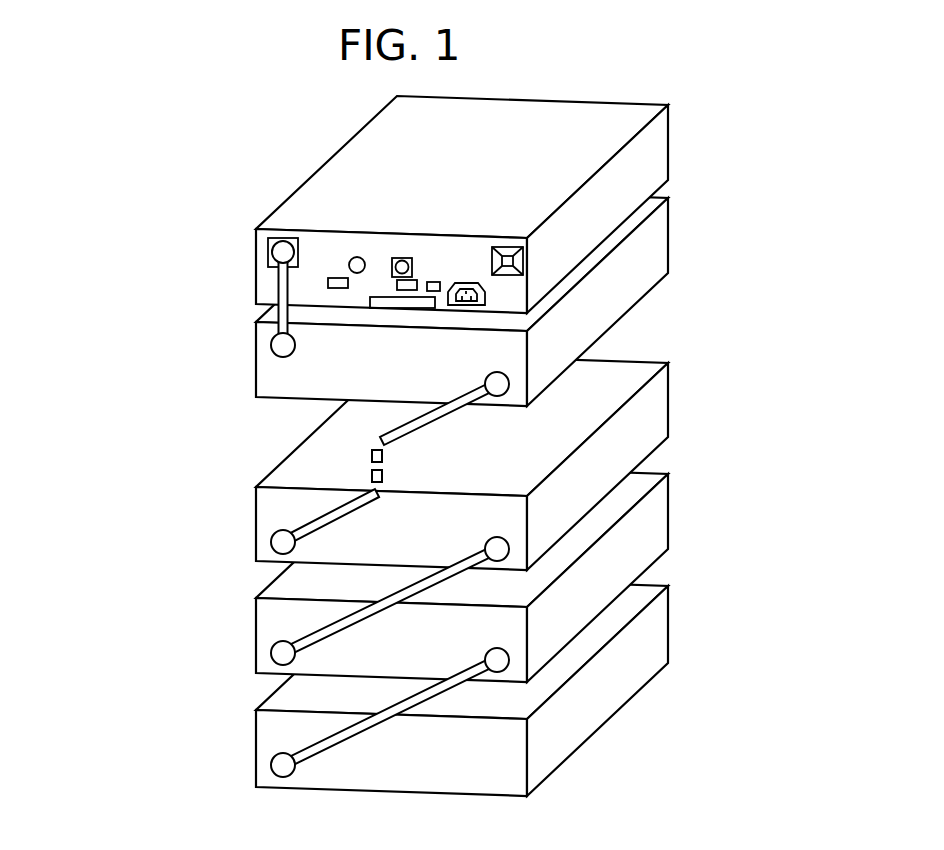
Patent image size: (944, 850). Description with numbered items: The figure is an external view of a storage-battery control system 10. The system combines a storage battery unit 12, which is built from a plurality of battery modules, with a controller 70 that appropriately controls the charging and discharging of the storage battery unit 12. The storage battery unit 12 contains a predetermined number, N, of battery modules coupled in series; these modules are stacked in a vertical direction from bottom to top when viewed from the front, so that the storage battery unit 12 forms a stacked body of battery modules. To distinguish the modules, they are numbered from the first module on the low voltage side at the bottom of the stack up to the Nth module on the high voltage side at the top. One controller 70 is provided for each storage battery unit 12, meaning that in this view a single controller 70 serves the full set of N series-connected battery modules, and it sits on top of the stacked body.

The storage-battery control system 10 is at (710, 168).
The storage battery unit 12 is at (113, 350).
The controller 70 is at (320, 190).